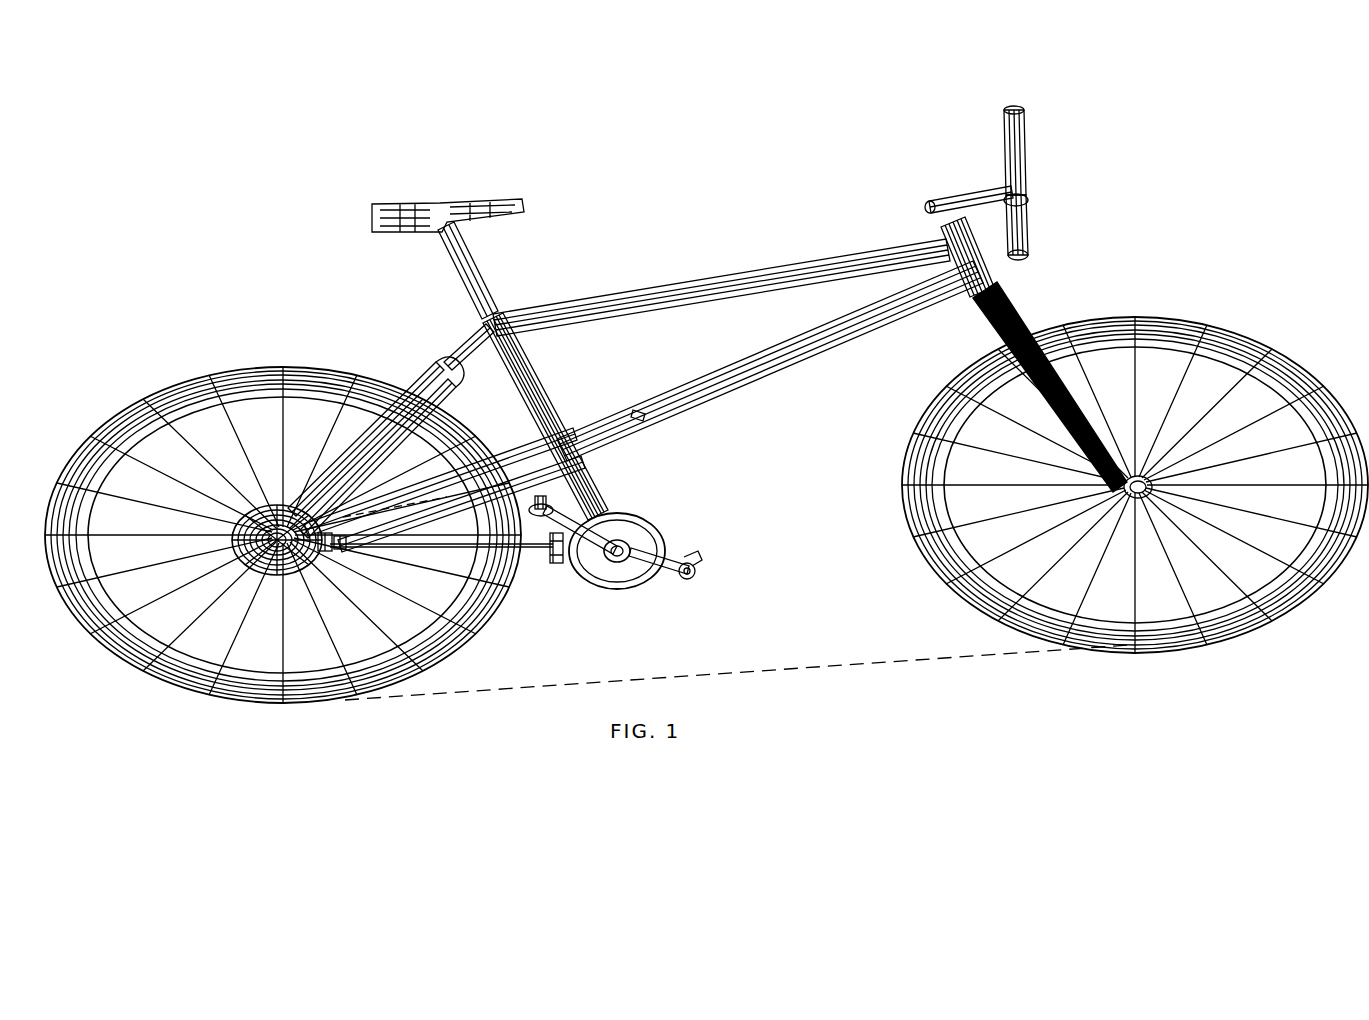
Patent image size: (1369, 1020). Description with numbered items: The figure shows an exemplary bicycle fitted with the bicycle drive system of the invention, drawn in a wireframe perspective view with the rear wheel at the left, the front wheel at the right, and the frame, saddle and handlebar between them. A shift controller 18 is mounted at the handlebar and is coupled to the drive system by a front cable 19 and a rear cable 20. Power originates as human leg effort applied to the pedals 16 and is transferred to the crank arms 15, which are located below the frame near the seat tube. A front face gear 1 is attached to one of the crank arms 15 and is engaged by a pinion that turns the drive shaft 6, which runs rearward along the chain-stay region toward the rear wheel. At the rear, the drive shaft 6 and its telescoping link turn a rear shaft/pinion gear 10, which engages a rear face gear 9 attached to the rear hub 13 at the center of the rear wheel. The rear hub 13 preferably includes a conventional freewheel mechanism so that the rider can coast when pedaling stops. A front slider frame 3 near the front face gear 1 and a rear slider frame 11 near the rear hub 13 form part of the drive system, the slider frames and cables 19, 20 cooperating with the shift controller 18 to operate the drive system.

The front face gear 1 is at (631, 590).
The front slider frame 3 is at (558, 568).
The drive shaft 6 is at (514, 566).
The rear face gear 9 is at (286, 576).
The rear shaft/pinion gear 10 is at (338, 527).
The rear slider frame 11 is at (362, 527).
The rear hub 13 is at (262, 520).
The crank arms 15 is at (692, 581).
The pedals 16 is at (701, 554).
The shift controller 18 is at (1040, 205).
The front cable 19 is at (583, 448).
The rear cable 20 is at (341, 572).